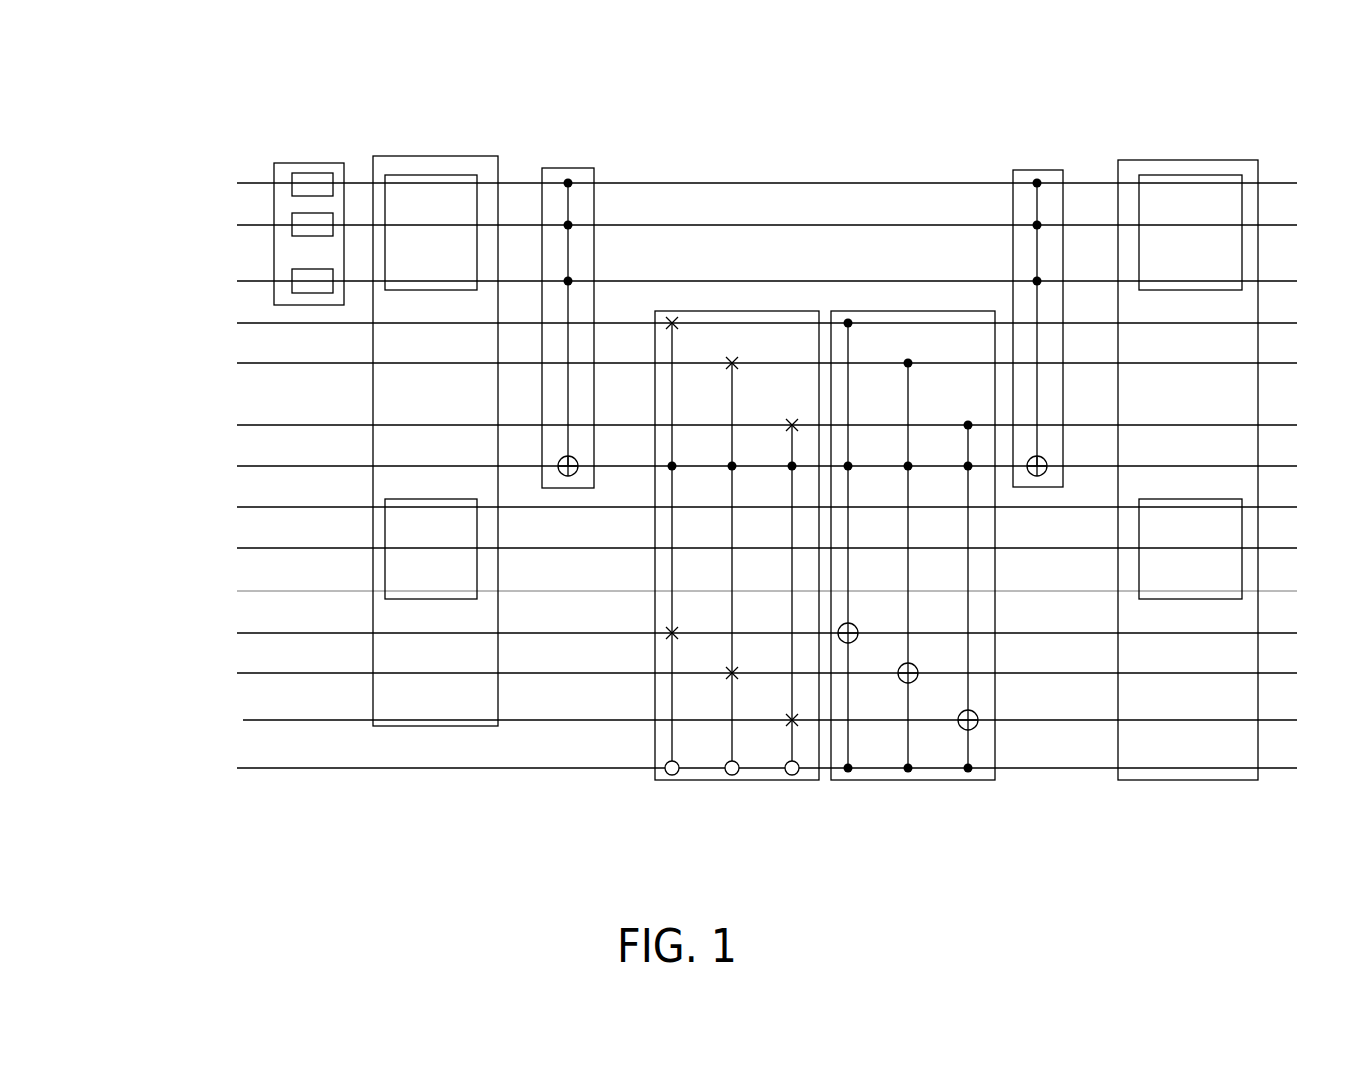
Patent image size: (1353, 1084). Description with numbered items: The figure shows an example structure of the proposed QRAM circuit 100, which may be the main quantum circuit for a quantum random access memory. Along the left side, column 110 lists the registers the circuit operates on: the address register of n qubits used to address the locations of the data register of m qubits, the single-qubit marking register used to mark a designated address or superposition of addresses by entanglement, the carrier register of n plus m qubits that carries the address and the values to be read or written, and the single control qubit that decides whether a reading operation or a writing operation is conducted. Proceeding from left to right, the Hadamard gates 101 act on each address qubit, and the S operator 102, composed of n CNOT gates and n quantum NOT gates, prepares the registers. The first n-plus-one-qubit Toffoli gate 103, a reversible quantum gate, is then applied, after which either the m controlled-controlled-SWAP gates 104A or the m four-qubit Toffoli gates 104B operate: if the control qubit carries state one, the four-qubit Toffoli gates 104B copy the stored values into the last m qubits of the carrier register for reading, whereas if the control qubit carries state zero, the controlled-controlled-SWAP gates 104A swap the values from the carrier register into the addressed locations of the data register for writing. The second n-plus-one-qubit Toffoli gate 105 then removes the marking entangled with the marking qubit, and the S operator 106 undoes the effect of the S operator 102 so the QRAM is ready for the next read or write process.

The QRAM circuit 100 is at (1063, 72).
The Hadamard gates 101 is at (253, 160).
The S operator 102 is at (482, 157).
The n+1-qubit Toffoli gate 103 is at (613, 198).
The controlled-controlled-SWAP gates 104A is at (646, 784).
The 4-qubit Toffoli gates 104B is at (992, 794).
The n+1-qubit Toffoli gate 105 is at (998, 208).
The S operator 106 is at (1211, 762).
The column of registers 110 is at (137, 132).